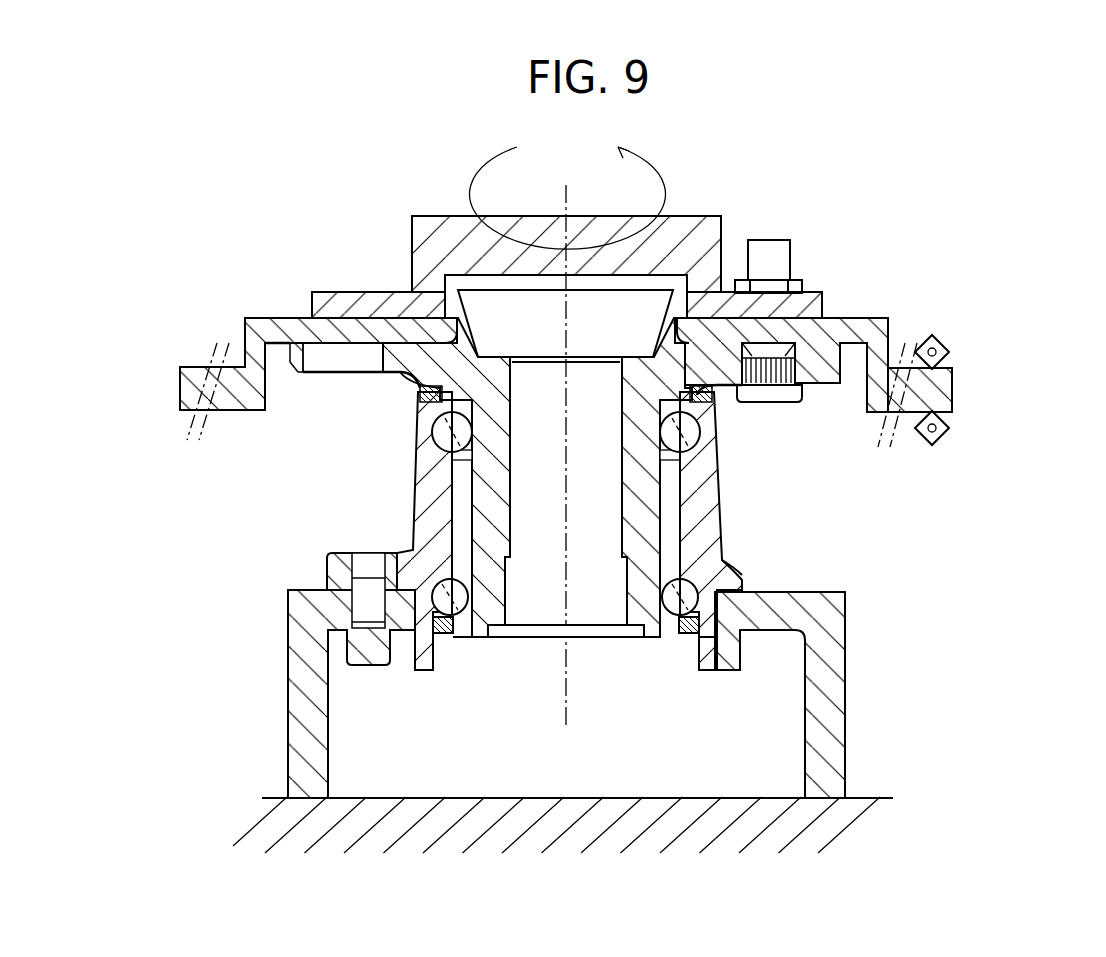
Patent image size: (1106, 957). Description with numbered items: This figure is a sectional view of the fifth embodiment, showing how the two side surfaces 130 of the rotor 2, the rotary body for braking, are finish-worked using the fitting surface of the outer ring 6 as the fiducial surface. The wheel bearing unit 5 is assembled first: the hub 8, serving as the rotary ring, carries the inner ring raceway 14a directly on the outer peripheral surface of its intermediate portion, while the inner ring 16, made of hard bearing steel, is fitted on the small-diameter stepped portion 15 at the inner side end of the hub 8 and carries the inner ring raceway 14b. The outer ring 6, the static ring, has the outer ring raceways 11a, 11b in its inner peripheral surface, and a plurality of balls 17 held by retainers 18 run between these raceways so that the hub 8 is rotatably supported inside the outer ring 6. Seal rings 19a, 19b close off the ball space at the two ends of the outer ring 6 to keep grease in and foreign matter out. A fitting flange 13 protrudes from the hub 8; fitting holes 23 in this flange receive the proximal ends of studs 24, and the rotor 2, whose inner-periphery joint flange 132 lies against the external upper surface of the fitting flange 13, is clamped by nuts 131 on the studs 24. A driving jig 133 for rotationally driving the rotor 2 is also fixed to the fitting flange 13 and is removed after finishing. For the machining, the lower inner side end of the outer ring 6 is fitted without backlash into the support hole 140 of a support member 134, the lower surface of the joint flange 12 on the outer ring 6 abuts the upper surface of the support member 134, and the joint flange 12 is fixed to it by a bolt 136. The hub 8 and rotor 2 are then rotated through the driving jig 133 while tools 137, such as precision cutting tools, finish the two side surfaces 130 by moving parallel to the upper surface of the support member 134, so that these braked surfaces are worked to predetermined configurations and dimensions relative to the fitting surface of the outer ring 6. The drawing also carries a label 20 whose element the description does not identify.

The rotor 2 is at (882, 318).
The wheel bearing unit 5 is at (800, 490).
The outer ring 6 is at (705, 510).
The hub 8 is at (488, 478).
The outer ring raceway 11a is at (440, 420).
The outer ring raceway 11b is at (740, 588).
The joint flange 12 is at (400, 625).
The fitting flange 13 is at (828, 345).
The inner ring raceway 14a is at (700, 455).
The inner ring raceway 14b is at (440, 590).
The small-diameter stepped portion 15 is at (658, 630).
The inner ring 16 is at (672, 638).
The balls 17 is at (700, 388).
The retainers 18 is at (718, 432).
The seal ring 19a is at (425, 403).
The seal ring 19b is at (720, 637).
The nut 20 is at (515, 400).
The fitting holes 23 is at (812, 355).
The studs 24 is at (805, 398).
The side surfaces 130 is at (950, 366).
The nuts 131 is at (470, 372).
The joint flange 132 is at (758, 280).
The driving jig 133 is at (678, 220).
The support member 134 is at (845, 665).
The bolt 136 is at (355, 605).
The tools 137 is at (944, 346).
The support hole 140 is at (720, 632).